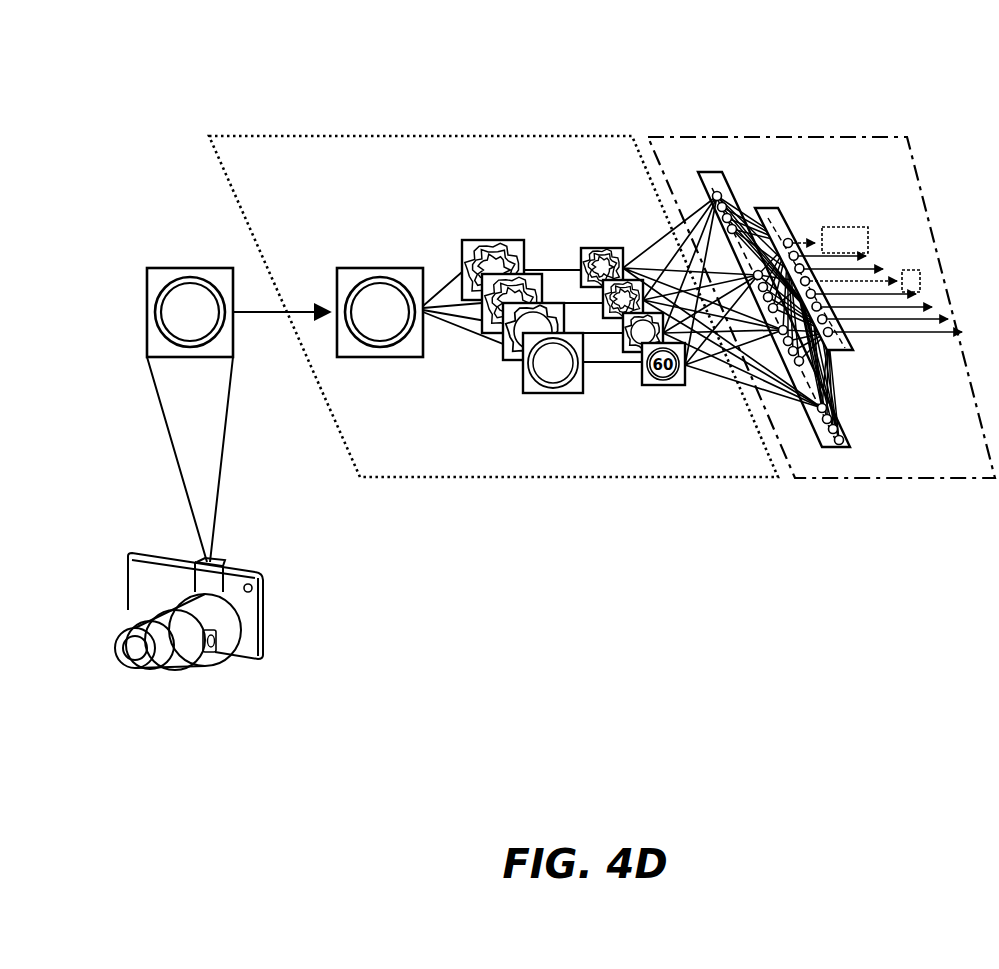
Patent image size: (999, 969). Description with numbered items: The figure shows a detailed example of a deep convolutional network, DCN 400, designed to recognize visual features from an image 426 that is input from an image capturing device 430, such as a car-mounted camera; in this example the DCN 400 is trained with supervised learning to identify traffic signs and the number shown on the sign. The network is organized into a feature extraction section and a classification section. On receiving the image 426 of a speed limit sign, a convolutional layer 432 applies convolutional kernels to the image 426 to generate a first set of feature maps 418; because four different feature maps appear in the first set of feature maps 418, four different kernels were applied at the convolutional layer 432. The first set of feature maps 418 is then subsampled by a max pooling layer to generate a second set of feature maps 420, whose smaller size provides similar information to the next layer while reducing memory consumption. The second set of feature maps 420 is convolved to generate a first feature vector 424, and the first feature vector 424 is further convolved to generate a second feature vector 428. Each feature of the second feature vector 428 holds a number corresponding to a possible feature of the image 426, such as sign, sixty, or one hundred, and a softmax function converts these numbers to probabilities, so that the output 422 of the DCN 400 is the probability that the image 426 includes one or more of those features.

The deep convolutional network 400 is at (278, 94).
The first set of feature maps 418 is at (483, 226).
The second set of feature maps 420 is at (587, 226).
The output 422 is at (832, 190).
The first feature vector 424 is at (705, 172).
The image 426 is at (186, 268).
The second feature vector 428 is at (853, 345).
The image capturing device 430 is at (185, 567).
The convolutional layer 432 is at (375, 268).